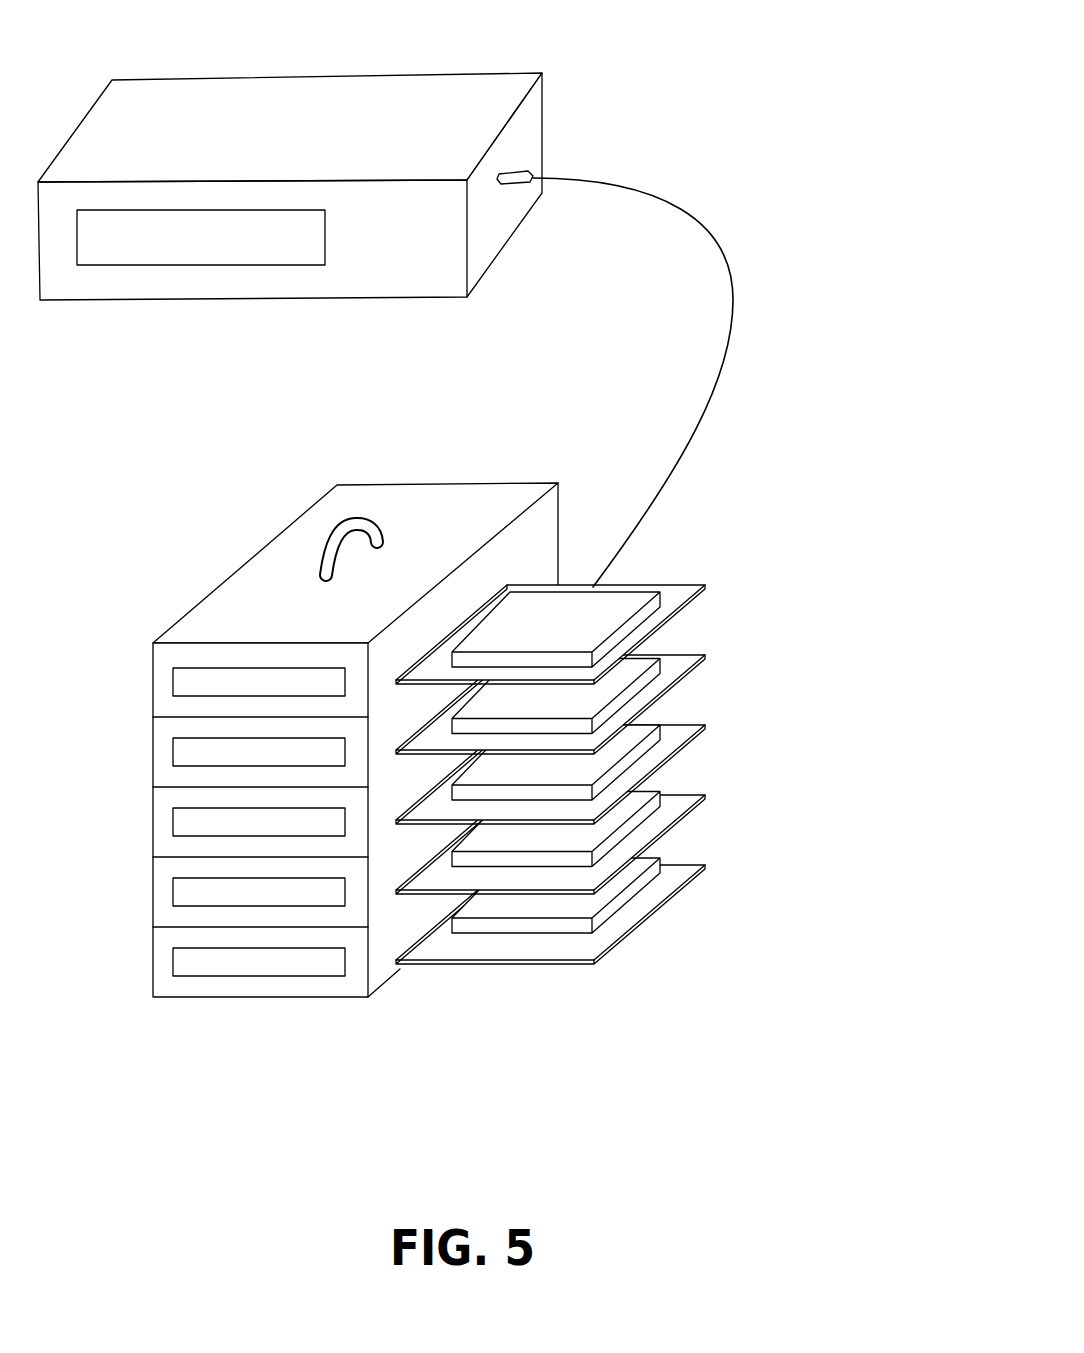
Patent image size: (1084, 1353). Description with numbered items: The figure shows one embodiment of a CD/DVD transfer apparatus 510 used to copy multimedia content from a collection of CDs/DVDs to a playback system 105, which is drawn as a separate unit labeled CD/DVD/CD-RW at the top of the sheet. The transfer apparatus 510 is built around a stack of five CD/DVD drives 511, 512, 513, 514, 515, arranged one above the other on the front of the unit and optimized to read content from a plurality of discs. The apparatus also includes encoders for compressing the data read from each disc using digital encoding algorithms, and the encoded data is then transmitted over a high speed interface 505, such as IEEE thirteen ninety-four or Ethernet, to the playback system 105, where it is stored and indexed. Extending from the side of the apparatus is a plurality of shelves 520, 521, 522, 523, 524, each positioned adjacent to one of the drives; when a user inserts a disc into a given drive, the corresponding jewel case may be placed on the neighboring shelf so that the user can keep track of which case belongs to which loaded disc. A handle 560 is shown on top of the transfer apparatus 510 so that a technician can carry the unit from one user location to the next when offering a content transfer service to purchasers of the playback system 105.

The playback system 105 is at (322, 76).
The interface 505 is at (735, 382).
The CD/DVD transfer apparatus 510 is at (238, 572).
The handle 560 is at (330, 523).
The CD/DVD drive 511 is at (173, 679).
The CD/DVD drive 512 is at (173, 749).
The CD/DVD drive 513 is at (173, 819).
The CD/DVD drive 514 is at (173, 889).
The CD/DVD drive 515 is at (173, 959).
The shelf 520 is at (705, 585).
The shelf 521 is at (705, 655).
The shelf 522 is at (705, 725).
The shelf 523 is at (705, 795).
The shelf 524 is at (705, 865).